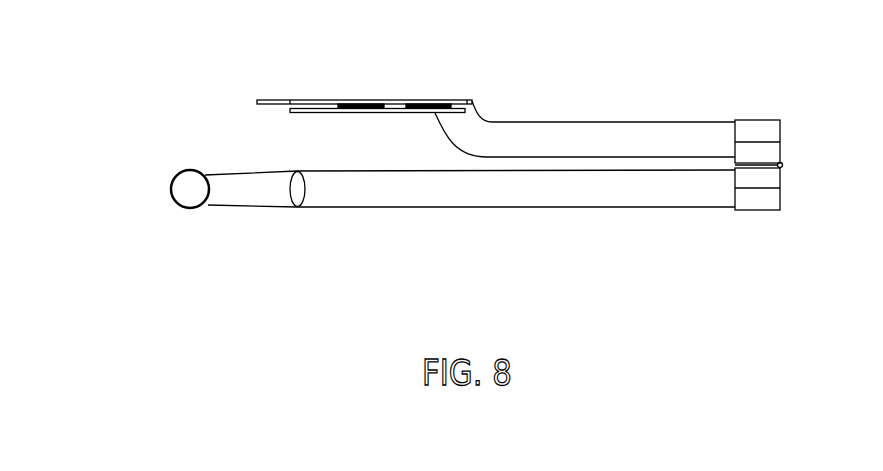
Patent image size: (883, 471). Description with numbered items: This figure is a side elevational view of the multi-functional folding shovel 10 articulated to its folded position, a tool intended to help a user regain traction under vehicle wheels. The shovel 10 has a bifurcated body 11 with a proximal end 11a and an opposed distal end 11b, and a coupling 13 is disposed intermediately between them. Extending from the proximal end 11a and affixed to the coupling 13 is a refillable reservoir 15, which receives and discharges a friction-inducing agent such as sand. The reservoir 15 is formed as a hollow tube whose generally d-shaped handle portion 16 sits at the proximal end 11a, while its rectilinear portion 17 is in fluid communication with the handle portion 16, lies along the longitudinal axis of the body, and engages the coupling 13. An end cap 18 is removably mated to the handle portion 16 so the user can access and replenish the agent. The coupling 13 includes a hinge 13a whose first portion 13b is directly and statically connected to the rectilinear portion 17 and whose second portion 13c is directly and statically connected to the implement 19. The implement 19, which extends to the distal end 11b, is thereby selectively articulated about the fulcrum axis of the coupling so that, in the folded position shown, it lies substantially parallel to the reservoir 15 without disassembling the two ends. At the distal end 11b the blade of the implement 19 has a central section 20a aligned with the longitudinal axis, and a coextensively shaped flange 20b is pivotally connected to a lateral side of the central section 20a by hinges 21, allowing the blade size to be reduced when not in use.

The multi-functional folding shovel 10 is at (96, 95).
The bifurcated body 11 is at (585, 103).
The proximal end 11a is at (158, 181).
The distal end 11b is at (243, 102).
The coupling 13 is at (761, 98).
The hinge 13a is at (783, 165).
The first portion 13b is at (768, 207).
The second portion 13c is at (777, 122).
The refillable reservoir 15 is at (414, 219).
The handle portion 16 is at (260, 198).
The rectilinear portion 17 is at (565, 202).
The end cap 18 is at (166, 211).
The implement 19 is at (501, 116).
The central section 20a is at (302, 101).
The coextensively shaped flange 20b is at (310, 113).
The hinges 21 is at (425, 105).